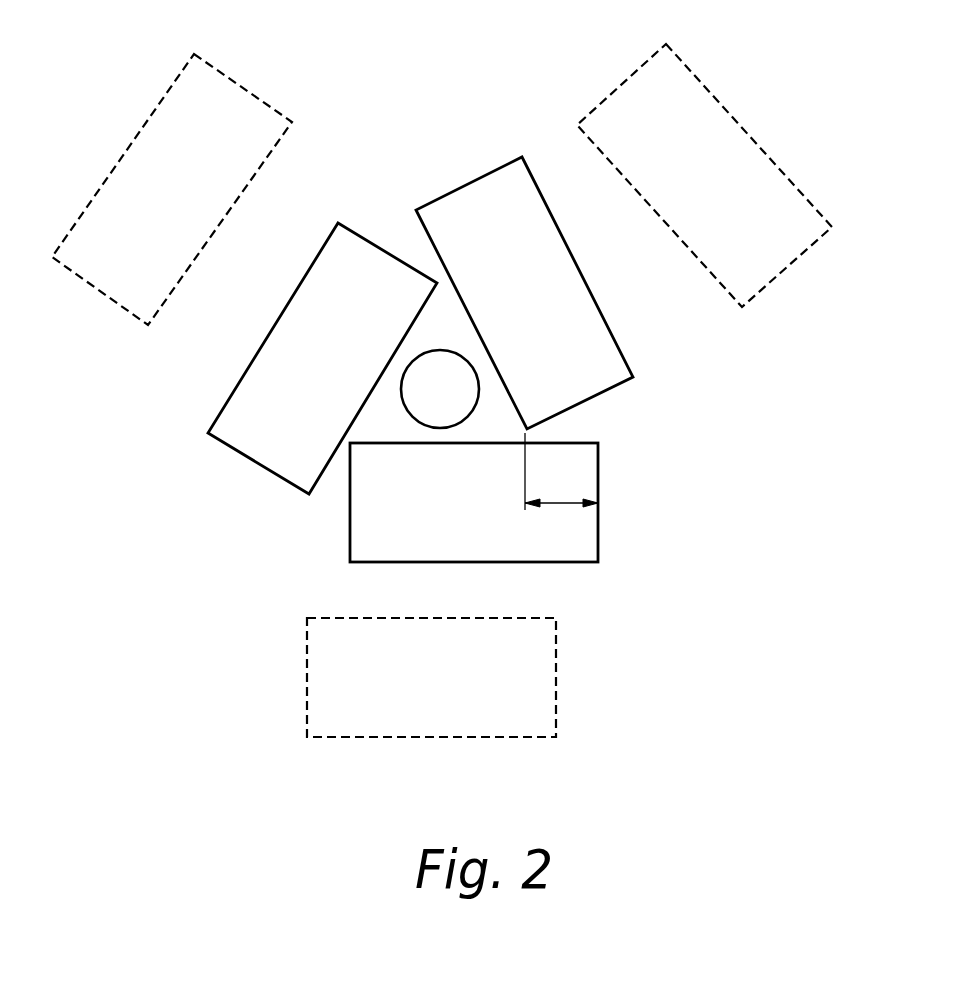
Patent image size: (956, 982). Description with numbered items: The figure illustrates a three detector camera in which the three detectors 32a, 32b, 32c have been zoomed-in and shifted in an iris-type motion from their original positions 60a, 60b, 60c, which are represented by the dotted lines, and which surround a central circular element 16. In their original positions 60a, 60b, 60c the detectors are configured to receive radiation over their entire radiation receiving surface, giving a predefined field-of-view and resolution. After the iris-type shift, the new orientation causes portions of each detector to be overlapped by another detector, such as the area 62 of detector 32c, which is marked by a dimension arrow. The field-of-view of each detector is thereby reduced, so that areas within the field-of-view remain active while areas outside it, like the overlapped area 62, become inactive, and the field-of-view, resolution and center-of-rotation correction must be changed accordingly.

The photosensitive drum / image bearing member 16 is at (453, 404).
The detector 32a is at (592, 324).
The detector 32b is at (253, 372).
The detector 32c is at (365, 509).
The original position 60a is at (730, 163).
The original position 60b is at (150, 145).
The original position 60c is at (532, 677).
The overlapped area 62 is at (560, 503).